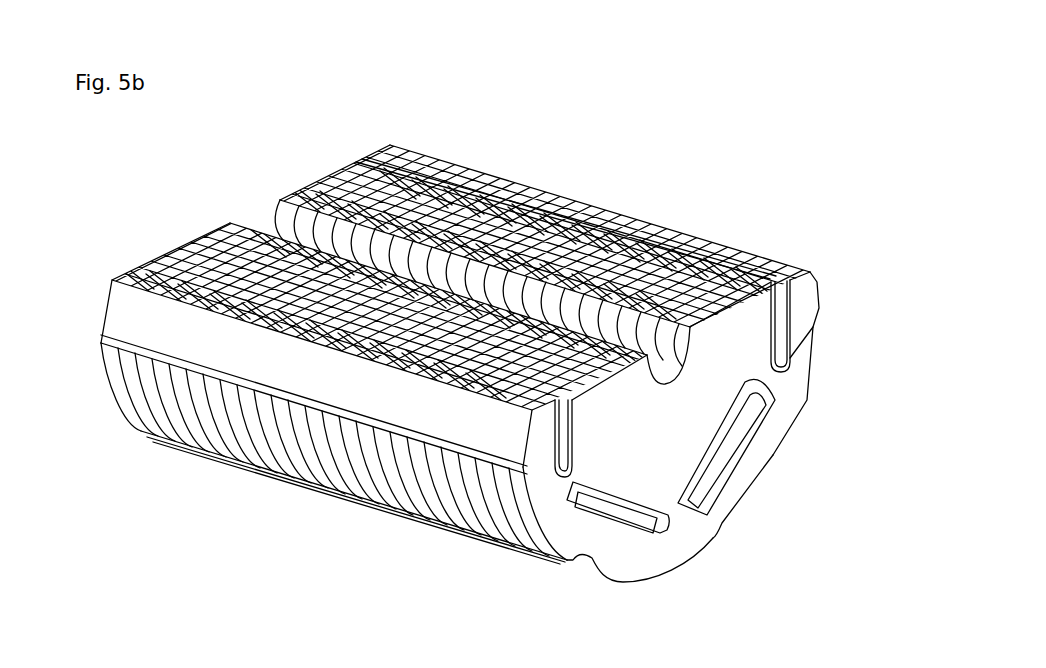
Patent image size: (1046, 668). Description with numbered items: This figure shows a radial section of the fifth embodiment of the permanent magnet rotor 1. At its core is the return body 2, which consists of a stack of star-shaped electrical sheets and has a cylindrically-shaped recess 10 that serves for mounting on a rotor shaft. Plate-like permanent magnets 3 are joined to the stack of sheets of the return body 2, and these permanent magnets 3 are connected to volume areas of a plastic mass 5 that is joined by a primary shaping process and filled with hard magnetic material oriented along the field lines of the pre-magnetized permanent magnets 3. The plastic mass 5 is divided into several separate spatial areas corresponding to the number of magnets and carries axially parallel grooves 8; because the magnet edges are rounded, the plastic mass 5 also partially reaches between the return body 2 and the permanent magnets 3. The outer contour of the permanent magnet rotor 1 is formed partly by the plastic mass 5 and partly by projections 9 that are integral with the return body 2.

The permanent magnet rotor 1 is at (797, 123).
The return body 2 is at (649, 444).
The permanent magnets 3 is at (152, 270).
The plastic mass 5 is at (519, 193).
The grooves 8 is at (100, 316).
The projections 9 is at (803, 360).
The cylindrically-shaped recess 10 is at (283, 222).